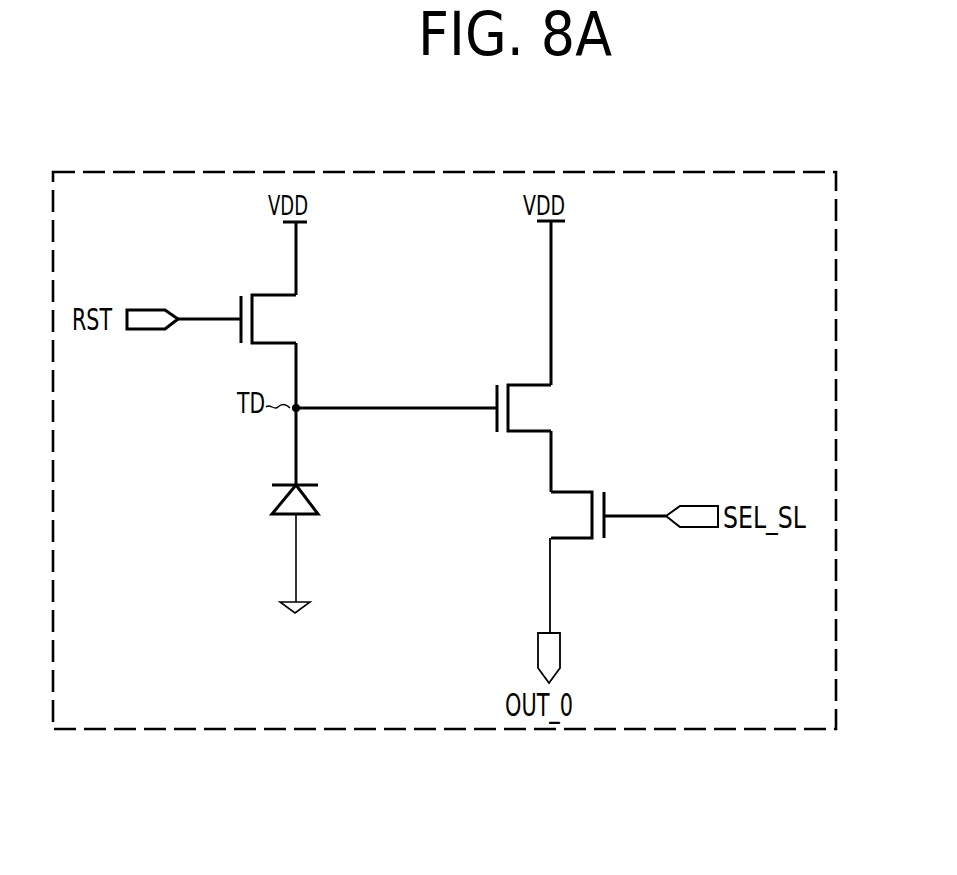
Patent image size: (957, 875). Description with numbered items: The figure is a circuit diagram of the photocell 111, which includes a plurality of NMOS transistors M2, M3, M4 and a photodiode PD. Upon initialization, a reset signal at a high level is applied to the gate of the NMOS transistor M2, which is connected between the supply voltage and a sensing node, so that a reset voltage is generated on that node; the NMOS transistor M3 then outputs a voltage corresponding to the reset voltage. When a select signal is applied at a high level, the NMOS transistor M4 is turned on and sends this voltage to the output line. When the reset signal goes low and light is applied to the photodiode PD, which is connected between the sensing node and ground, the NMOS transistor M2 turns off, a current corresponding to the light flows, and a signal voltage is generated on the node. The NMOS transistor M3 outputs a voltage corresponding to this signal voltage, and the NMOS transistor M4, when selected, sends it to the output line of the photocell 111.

The photocell 111 is at (742, 172).
The NMOS transistor M2 is at (274, 319).
The NMOS transistor M3 is at (528, 408).
The NMOS transistor M4 is at (572, 515).
The photodiode PD is at (313, 502).